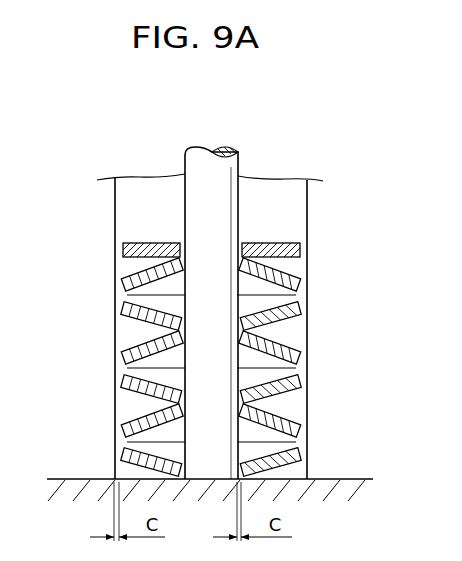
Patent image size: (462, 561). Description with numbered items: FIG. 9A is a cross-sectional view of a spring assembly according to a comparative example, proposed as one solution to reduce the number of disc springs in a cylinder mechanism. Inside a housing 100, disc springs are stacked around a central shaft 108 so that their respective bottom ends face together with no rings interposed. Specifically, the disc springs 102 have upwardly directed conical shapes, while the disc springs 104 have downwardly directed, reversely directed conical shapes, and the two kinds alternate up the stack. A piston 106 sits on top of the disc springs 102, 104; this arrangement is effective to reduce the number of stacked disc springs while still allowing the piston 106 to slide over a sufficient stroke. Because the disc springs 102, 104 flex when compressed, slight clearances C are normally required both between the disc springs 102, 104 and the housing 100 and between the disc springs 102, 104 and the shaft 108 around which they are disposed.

The housing 100 is at (115, 210).
The disc springs 102 is at (123, 282).
The disc springs 104 is at (127, 317).
The piston 106 is at (123, 248).
The shaft 108 is at (223, 178).